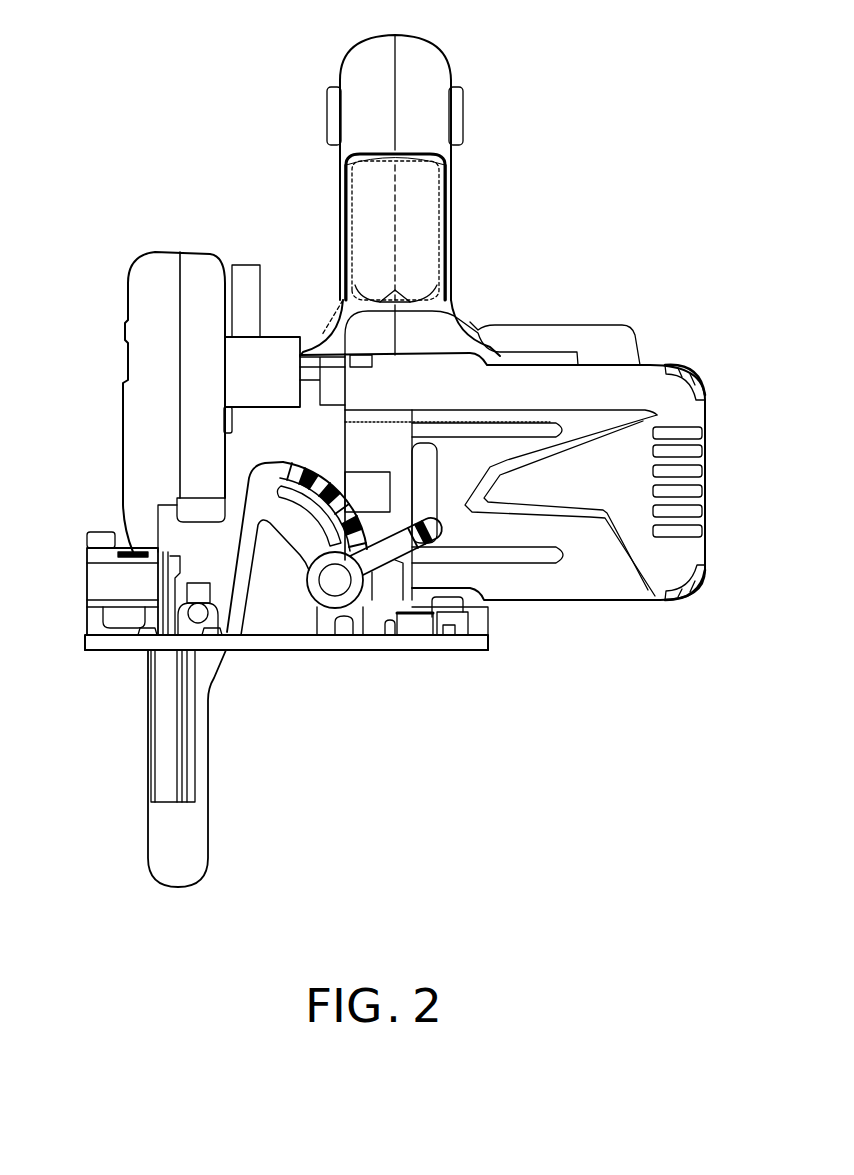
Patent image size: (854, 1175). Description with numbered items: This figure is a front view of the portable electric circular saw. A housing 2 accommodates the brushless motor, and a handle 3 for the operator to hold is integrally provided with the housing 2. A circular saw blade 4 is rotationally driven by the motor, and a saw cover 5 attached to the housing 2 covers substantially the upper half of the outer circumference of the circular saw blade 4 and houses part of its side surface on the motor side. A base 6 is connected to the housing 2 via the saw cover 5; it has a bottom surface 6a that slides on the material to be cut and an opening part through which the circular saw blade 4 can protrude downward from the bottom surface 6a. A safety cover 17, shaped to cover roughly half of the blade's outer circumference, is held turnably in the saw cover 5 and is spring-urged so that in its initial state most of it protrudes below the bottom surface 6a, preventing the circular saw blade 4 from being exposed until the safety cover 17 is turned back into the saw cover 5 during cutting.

The housing 2 is at (608, 592).
The handle 3 is at (432, 53).
The circular saw blade 4 is at (186, 757).
The saw cover 5 is at (148, 275).
The base 6 is at (87, 646).
The bottom surface 6a is at (297, 653).
The safety cover 17 is at (209, 856).